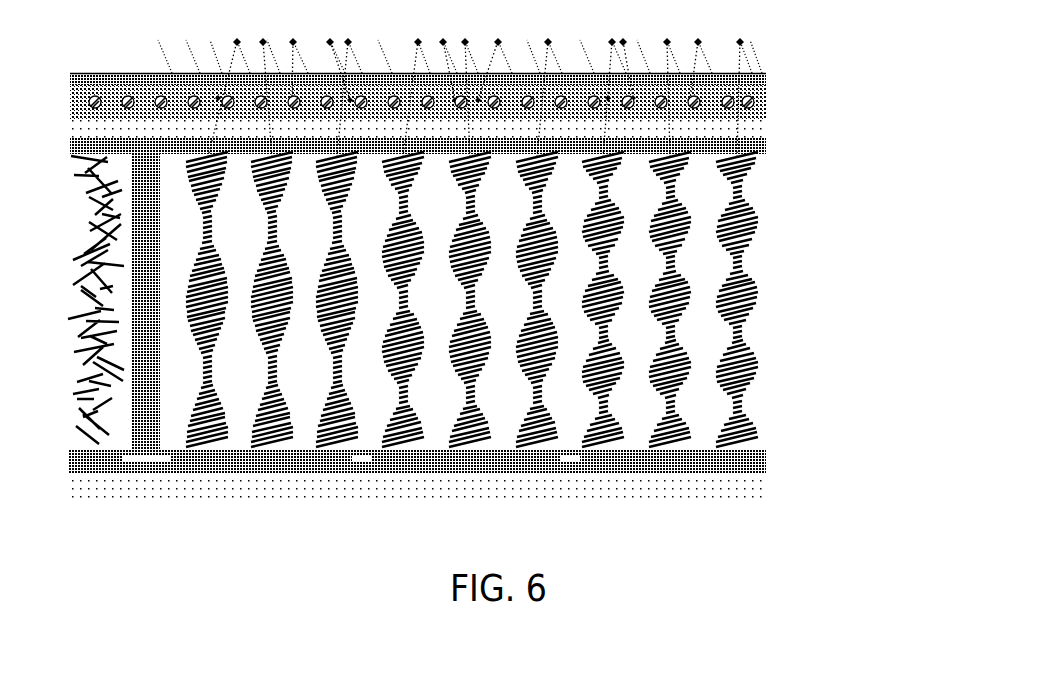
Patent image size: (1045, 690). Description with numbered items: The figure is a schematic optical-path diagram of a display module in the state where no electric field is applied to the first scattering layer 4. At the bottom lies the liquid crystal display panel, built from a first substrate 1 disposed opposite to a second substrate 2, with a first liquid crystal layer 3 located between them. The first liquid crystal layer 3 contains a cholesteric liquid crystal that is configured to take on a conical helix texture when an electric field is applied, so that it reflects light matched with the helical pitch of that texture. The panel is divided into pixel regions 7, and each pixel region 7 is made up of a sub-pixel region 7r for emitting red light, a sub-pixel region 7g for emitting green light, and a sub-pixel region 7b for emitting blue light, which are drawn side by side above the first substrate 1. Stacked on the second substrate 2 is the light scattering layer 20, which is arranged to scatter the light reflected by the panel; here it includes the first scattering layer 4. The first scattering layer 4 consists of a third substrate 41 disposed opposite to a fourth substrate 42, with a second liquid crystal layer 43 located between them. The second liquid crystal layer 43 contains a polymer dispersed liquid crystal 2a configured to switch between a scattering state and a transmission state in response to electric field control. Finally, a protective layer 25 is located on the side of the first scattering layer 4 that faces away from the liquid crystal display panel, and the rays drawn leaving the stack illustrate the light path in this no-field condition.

The first substrate 1 is at (753, 464).
The second substrate 2 is at (768, 148).
The polymer dispersed liquid crystal 2a is at (749, 97).
The first liquid crystal layer 3 is at (493, 351).
The first scattering layer 4 is at (487, 86).
The light scattering layer 20 is at (487, 86).
The protective layer 25 is at (767, 76).
The third substrate 41 is at (768, 120).
The fourth substrate 42 is at (450, 71).
The second liquid crystal layer 43 is at (768, 86).
The pixel region 7 is at (468, 351).
The sub-pixel region for emitting red light 7r is at (172, 503).
The sub-pixel region for emitting green light 7g is at (380, 503).
The sub-pixel region for emitting blue light 7b is at (583, 503).